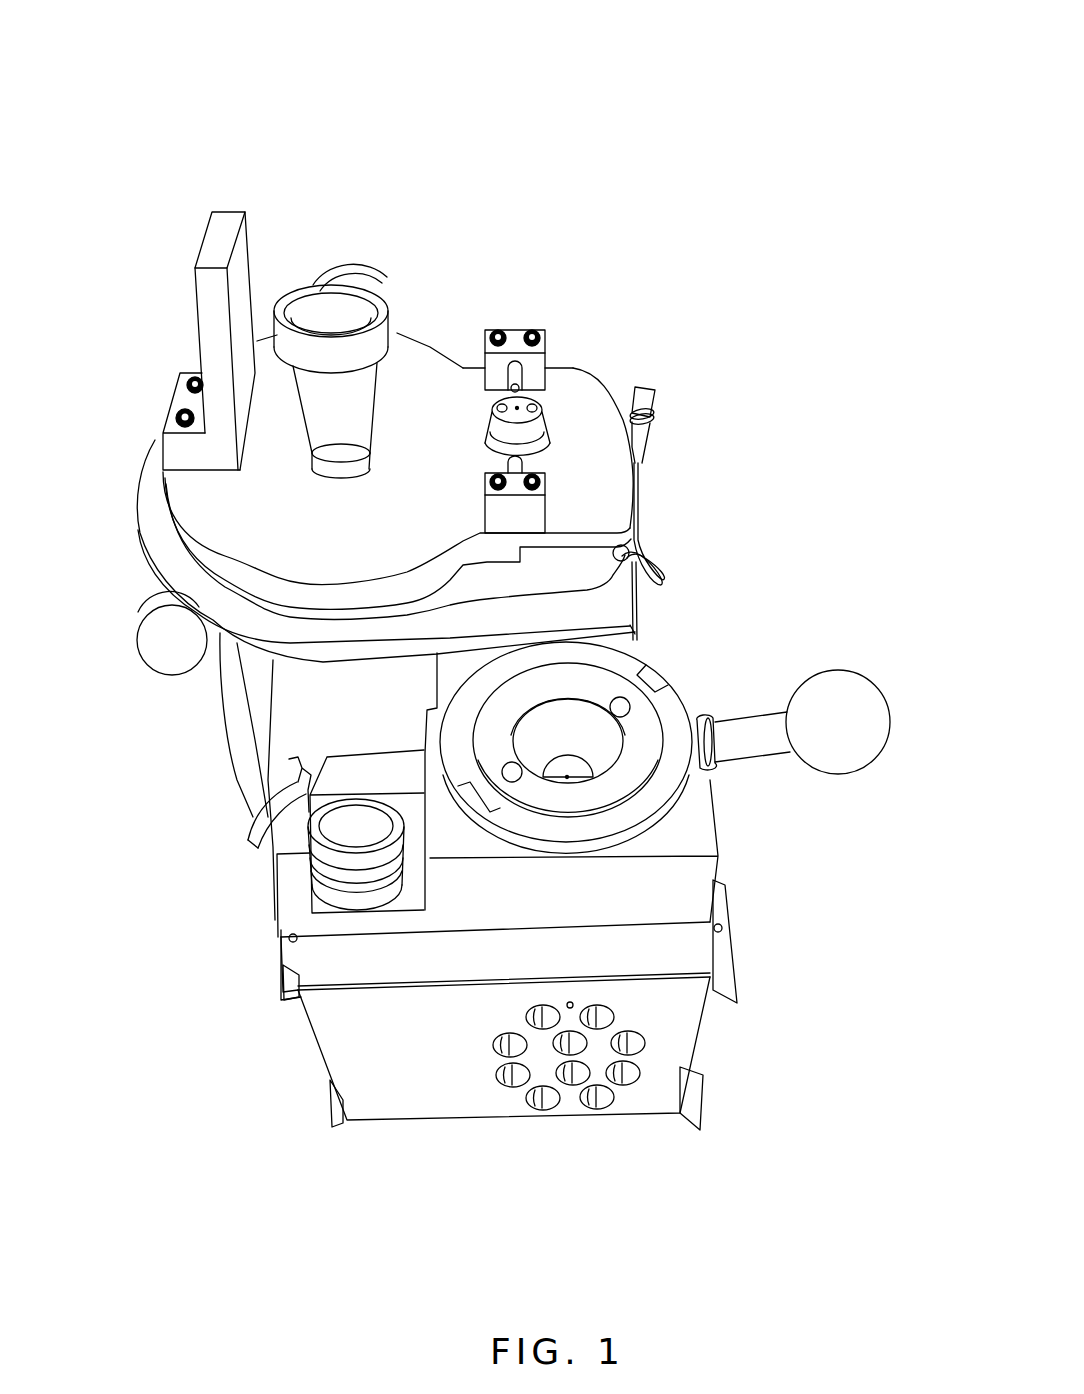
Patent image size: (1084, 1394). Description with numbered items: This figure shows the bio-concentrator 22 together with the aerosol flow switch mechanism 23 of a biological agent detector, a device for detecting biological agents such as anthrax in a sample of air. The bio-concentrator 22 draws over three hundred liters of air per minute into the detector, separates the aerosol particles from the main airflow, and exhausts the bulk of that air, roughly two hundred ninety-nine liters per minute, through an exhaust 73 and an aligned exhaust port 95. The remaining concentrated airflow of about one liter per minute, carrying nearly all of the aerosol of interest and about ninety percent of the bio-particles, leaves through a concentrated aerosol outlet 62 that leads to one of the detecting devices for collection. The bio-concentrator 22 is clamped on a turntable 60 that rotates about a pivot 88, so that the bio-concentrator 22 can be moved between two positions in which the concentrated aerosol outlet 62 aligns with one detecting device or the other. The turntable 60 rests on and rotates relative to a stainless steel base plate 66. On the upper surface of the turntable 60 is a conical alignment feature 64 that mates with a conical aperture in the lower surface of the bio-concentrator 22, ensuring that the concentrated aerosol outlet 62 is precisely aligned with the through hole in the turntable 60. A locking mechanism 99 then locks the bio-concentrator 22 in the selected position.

The bio-concentrator 22 is at (790, 1059).
The aerosol flow switch mechanism 23 is at (740, 127).
The turntable 60 is at (420, 382).
The concentrated aerosol outlet 62 is at (597, 743).
The conical alignment feature 64 is at (542, 417).
The stainless steel base plate 66 is at (193, 572).
The exhaust 73 is at (352, 838).
The pivot 88 is at (338, 467).
The exhaust port 95 is at (335, 307).
The locking mechanism 99 is at (545, 488).